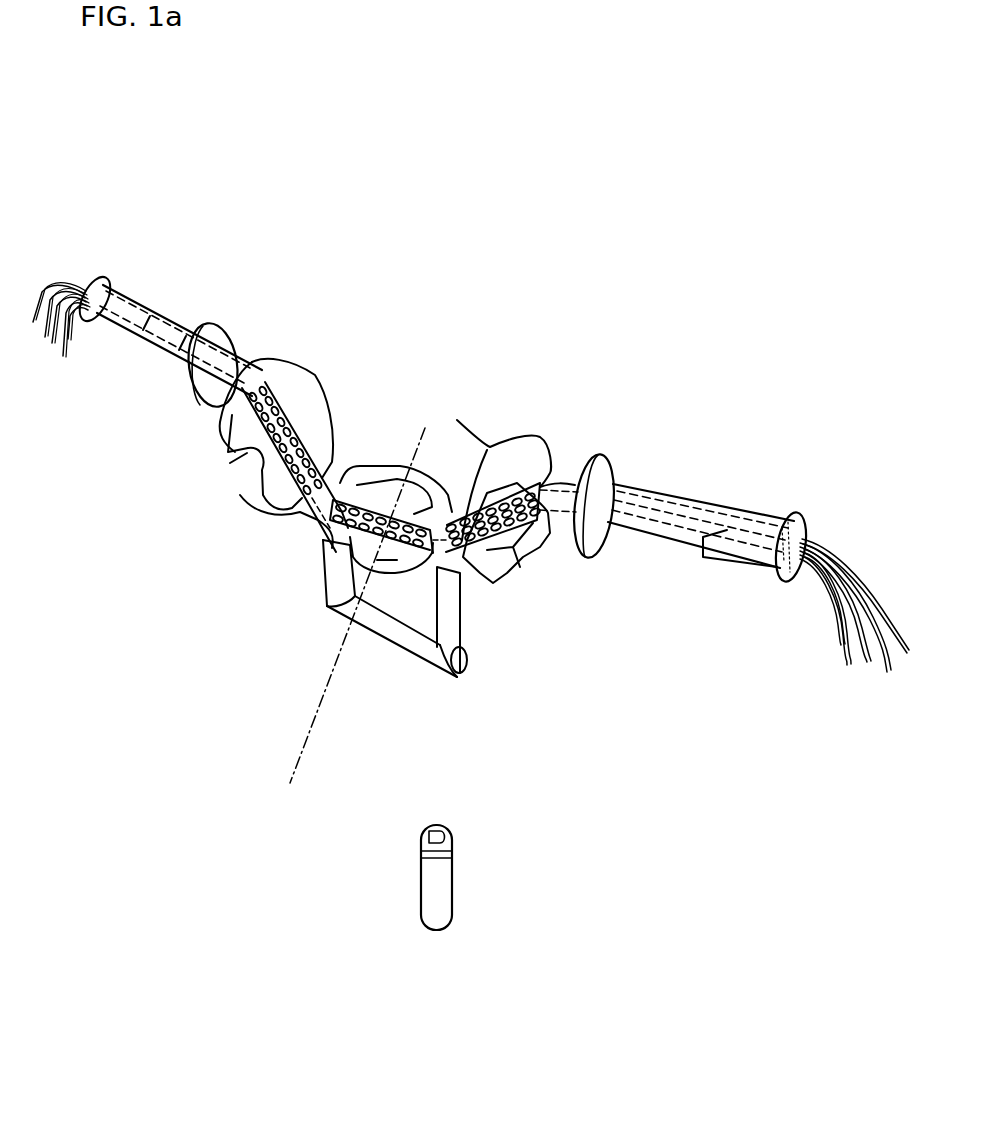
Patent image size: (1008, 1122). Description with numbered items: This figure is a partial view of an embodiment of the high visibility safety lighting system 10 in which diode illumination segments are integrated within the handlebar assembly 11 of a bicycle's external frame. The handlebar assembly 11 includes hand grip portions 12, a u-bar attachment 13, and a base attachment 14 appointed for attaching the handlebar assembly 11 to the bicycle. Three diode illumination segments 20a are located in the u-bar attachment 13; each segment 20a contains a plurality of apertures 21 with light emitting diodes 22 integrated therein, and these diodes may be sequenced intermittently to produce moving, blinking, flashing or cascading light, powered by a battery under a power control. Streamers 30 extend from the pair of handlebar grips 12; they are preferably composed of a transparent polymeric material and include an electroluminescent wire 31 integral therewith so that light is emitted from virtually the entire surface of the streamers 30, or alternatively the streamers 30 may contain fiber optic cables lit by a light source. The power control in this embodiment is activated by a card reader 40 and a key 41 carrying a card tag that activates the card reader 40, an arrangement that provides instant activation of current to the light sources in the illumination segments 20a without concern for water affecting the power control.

The high visibility safety lighting system 10 is at (370, 172).
The handlebar assembly 11 is at (338, 588).
The hand grip portions 12 is at (161, 311).
The u-bar attachment 13 is at (491, 444).
The base attachment 14 is at (466, 660).
The diode illumination segment 20a is at (397, 474).
The apertures 21 is at (267, 392).
The light emitting diodes 22 is at (285, 465).
The streamers 30 is at (843, 646).
The electroluminescent wire 31 is at (827, 530).
The card reader 40 is at (755, 558).
The key 41 is at (432, 880).